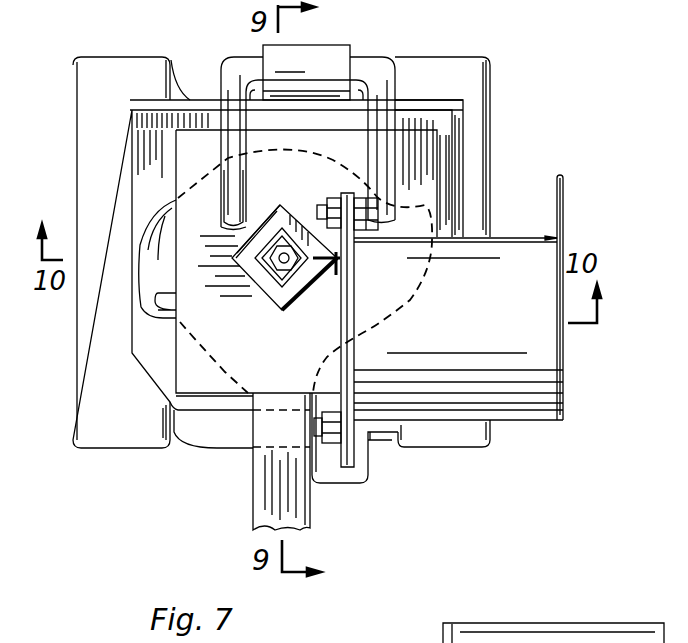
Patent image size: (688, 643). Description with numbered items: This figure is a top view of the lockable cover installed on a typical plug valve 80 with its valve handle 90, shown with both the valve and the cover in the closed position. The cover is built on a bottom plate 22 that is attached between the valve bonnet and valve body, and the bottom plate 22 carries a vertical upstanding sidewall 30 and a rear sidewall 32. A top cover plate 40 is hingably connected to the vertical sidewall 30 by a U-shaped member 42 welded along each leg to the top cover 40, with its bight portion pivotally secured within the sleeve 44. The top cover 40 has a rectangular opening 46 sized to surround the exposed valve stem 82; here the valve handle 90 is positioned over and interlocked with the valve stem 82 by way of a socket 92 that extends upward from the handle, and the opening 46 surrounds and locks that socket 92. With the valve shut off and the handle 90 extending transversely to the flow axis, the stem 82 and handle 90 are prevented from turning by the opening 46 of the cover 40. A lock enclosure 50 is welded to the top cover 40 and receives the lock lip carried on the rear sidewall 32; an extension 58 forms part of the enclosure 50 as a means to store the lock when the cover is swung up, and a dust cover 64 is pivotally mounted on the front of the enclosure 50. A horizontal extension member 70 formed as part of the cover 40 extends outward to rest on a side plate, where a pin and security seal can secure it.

The bottom plate 22 is at (160, 347).
The vertical upstanding sidewall 30 is at (188, 98).
The rear sidewall 32 is at (458, 158).
The top cover plate 40 is at (185, 168).
The U-shaped member 42 is at (372, 67).
The sleeve 44 is at (323, 45).
The rectangular opening 46 is at (253, 242).
The lock enclosure 50 is at (463, 320).
The extension 58 is at (562, 192).
The dust cover 64 is at (352, 458).
The horizontal extension member 70 is at (363, 483).
The plug valve 80 is at (490, 73).
The valve stem 82 is at (280, 300).
The valve handle 90 is at (253, 505).
The socket 92 is at (283, 220).